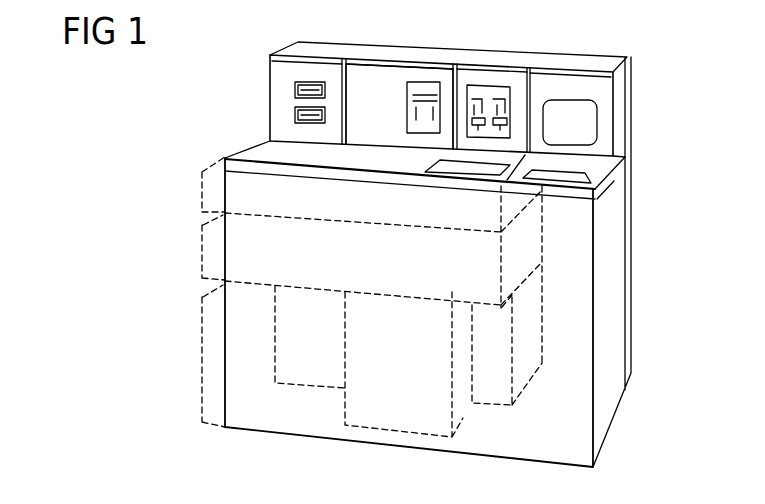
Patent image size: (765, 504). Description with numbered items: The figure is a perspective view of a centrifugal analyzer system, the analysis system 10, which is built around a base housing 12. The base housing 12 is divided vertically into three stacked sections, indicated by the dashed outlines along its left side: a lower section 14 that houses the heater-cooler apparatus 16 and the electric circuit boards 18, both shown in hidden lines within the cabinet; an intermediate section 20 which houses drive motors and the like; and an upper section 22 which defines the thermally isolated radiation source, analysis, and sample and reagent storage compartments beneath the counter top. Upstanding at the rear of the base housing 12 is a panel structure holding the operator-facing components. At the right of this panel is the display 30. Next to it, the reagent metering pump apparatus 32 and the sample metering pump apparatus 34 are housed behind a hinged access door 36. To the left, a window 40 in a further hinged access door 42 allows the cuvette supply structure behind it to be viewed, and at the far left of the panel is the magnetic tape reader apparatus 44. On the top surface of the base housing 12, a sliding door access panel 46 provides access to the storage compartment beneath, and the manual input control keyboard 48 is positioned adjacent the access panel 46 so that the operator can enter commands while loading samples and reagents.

The analysis system 10 is at (140, 143).
The base housing 12 is at (625, 262).
The lower section 14 is at (203, 356).
The heater-cooler apparatus 16 is at (540, 333).
The electric circuit boards 18 is at (337, 409).
The intermediate section 20 is at (205, 243).
The upper section 22 is at (203, 193).
The display 30 is at (590, 118).
The reagent metering pump apparatus 32 is at (482, 92).
The sample metering pump apparatus 34 is at (498, 88).
The hinged access door 36 is at (515, 82).
The window 40 is at (417, 85).
The hinged access door 42 is at (370, 70).
The magnetic tape reader apparatus 44 is at (278, 87).
The sliding door access panel 46 is at (437, 163).
The manual input control keyboard 48 is at (583, 175).